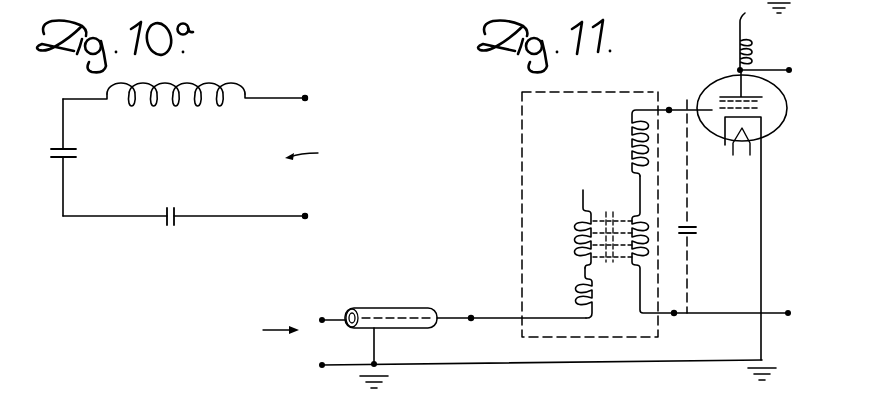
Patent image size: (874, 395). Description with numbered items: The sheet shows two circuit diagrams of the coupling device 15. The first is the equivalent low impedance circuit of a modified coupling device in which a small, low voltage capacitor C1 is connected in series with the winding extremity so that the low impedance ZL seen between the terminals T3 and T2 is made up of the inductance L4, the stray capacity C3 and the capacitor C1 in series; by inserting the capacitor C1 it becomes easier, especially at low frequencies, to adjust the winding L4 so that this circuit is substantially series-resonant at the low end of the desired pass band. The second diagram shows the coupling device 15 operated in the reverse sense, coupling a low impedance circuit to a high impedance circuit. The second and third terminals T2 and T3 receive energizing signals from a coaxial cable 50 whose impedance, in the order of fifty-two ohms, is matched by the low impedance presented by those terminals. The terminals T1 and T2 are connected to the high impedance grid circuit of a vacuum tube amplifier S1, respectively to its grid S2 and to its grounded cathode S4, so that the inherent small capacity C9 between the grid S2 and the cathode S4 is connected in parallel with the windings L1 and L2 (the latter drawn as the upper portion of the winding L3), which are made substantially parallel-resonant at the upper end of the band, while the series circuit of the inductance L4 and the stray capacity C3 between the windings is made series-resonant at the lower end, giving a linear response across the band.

In FIG. 10A, the fourth winding L4 is at (190, 84).
In FIG. 11, the fourth winding L4 is at (580, 290).
In FIG. 10A, the stray capacity C3 is at (57, 147).
In FIG. 11, the stray capacity C3 is at (597, 214).
In FIG. 10A, the capacitor C1 is at (178, 224).
In FIG. 10A, the third terminal T3 is at (309, 96).
In FIG. 11, the third terminal T3 is at (471, 312).
In FIG. 10A, the second terminal T2 is at (306, 219).
In FIG. 11, the second terminal T2 is at (674, 316).
In FIG. 10A, the low impedance ZL is at (311, 154).
In FIG. 11, the coupling device 15 is at (575, 92).
In FIG. 11, the coaxial cable 50 is at (411, 308).
In FIG. 11, the third winding L3 is at (578, 236).
In FIG. 11, the first winding L1 is at (630, 137).
In FIG. 11, the first terminal T1 is at (669, 107).
In FIG. 11, the grid-cathode capacity C9 is at (690, 238).
In FIG. 11, the vacuum tube amplifier S1 is at (708, 92).
In FIG. 11, the grid S2 is at (759, 109).
In FIG. 11, the cathode S4 is at (727, 121).